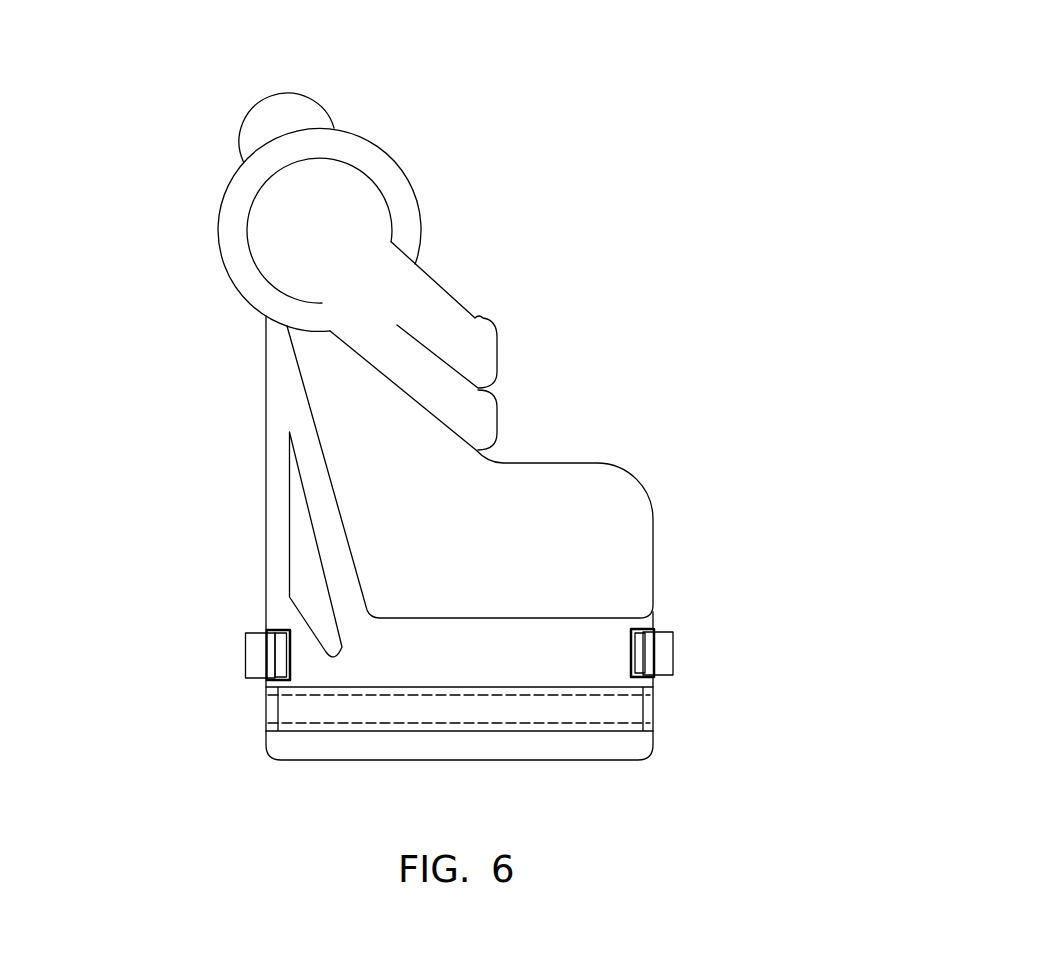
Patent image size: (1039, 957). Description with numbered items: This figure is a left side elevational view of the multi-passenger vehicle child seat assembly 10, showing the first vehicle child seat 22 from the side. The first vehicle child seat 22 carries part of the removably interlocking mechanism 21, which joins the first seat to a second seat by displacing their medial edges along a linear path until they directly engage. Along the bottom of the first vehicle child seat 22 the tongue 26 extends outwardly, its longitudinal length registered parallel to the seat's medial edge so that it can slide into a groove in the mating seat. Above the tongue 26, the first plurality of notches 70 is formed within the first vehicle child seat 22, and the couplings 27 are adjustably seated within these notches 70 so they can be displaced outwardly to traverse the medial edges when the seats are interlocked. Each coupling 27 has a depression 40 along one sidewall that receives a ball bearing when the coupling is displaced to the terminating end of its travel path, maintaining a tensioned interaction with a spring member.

The multi-passenger vehicle child seat assembly 10 is at (957, 150).
The removably interlocking mechanism 21 is at (250, 616).
The first vehicle child seat 22 is at (662, 497).
The tongue 26 is at (413, 712).
The couplings 27 is at (258, 660).
The depressions 40 is at (283, 657).
The first plurality of notches 70 is at (263, 678).